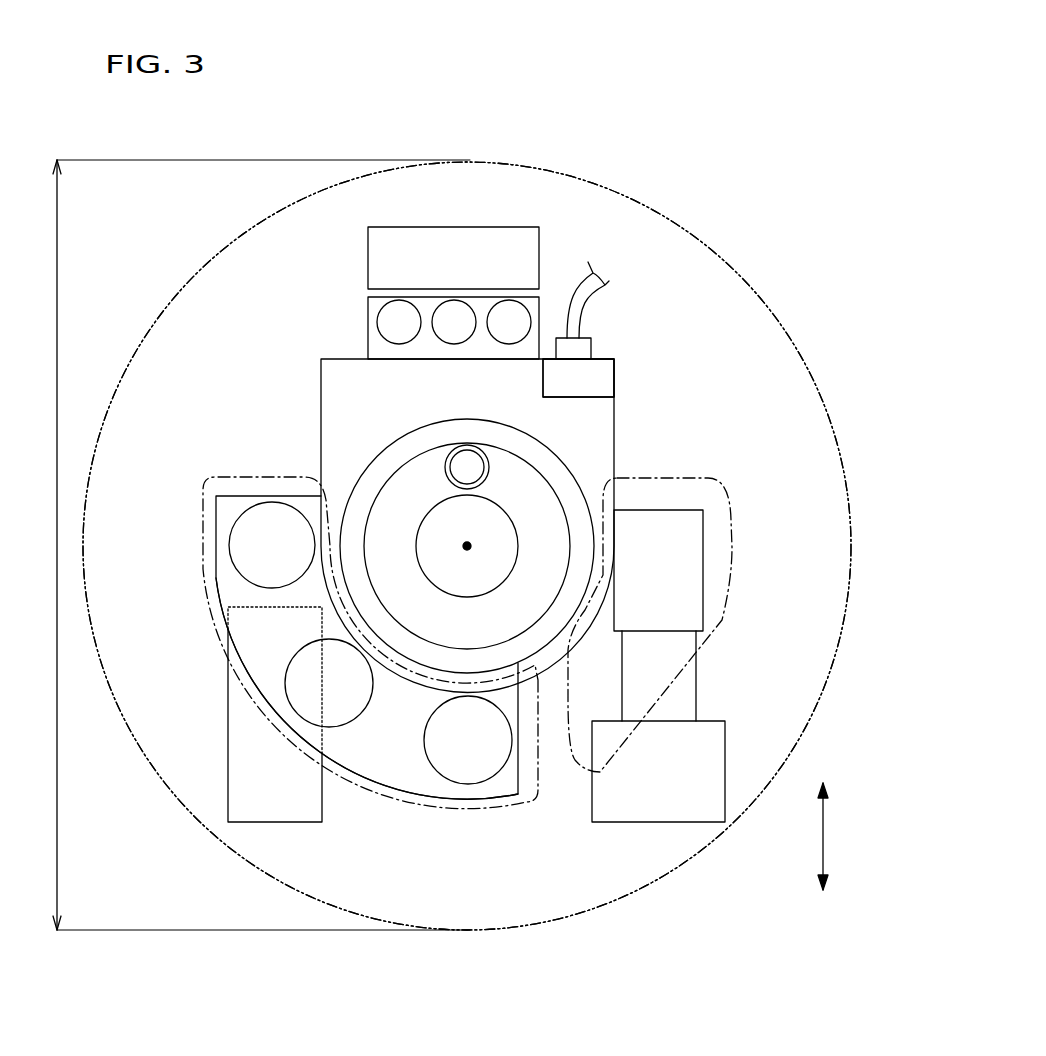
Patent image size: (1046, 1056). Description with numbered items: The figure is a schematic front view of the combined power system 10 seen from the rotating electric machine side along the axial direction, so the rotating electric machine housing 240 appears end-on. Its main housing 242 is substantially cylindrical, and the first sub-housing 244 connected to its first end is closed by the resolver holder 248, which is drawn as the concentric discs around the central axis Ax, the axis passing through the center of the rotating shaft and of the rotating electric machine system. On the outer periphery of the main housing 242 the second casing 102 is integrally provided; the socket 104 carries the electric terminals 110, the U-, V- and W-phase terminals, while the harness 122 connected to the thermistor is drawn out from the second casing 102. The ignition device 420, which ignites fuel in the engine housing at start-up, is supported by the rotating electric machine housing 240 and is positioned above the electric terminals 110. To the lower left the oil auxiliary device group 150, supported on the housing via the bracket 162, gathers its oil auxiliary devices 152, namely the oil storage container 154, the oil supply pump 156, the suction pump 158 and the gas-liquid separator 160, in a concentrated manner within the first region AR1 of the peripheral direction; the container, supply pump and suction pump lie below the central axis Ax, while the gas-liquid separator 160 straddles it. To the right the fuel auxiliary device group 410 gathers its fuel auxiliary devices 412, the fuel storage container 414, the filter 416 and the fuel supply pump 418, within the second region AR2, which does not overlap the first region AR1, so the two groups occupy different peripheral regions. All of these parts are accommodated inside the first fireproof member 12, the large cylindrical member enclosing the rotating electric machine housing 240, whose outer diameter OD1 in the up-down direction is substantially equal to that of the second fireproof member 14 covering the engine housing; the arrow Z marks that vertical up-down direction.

The combined power system 10 is at (814, 111).
The first fireproof member 12 is at (676, 220).
The second fireproof member 14 is at (467, 546).
The second casing 102 is at (437, 388).
The socket 104 is at (393, 322).
The electric terminals 110 is at (399, 322).
The harness 122 is at (581, 270).
The oil auxiliary device group 150 is at (497, 778).
The oil auxiliary device 152 is at (298, 708).
The oil storage container 154 is at (261, 797).
The oil supply pump 156 is at (478, 765).
The suction pump 158 is at (345, 727).
The gas-liquid separator 160 is at (253, 533).
The bracket 162 is at (438, 785).
The rotating electric machine housing 240 is at (597, 412).
The main housing 242 is at (598, 431).
The first sub-housing 244 is at (503, 436).
The resolver holder 248 is at (408, 487).
The fuel auxiliary device group 410 is at (715, 706).
The fuel auxiliary device 412 is at (715, 716).
The fuel storage container 414 is at (665, 808).
The filter 416 is at (678, 665).
The fuel supply pump 418 is at (683, 580).
The ignition device 420 is at (452, 237).
The first region AR1 is at (210, 487).
The second region AR2 is at (722, 486).
The central axis Ax is at (466, 544).
The outer diameter OD1 is at (91, 545).
The Z direction Z is at (830, 836).